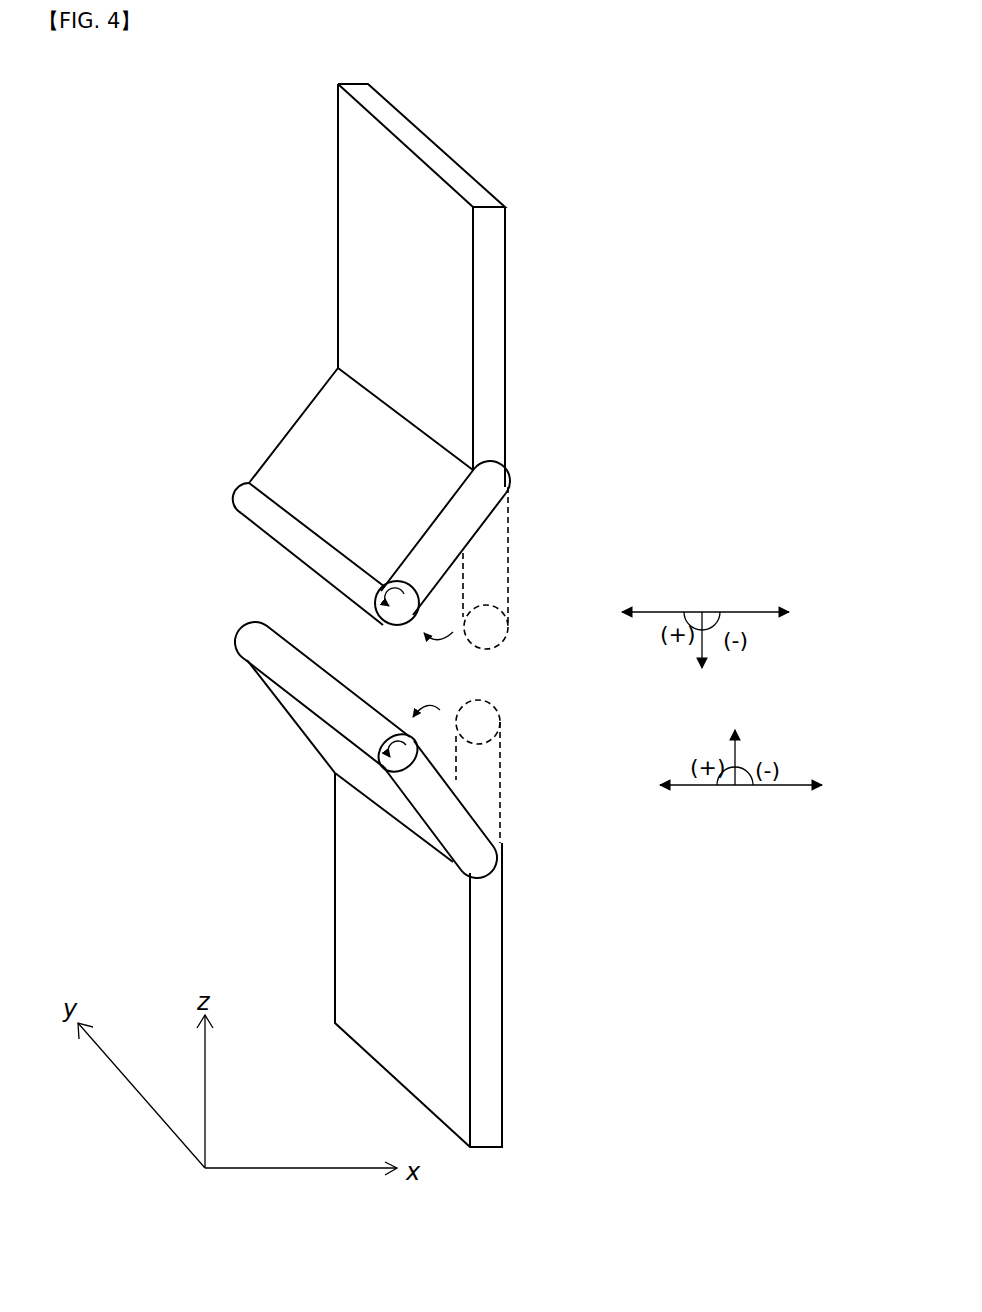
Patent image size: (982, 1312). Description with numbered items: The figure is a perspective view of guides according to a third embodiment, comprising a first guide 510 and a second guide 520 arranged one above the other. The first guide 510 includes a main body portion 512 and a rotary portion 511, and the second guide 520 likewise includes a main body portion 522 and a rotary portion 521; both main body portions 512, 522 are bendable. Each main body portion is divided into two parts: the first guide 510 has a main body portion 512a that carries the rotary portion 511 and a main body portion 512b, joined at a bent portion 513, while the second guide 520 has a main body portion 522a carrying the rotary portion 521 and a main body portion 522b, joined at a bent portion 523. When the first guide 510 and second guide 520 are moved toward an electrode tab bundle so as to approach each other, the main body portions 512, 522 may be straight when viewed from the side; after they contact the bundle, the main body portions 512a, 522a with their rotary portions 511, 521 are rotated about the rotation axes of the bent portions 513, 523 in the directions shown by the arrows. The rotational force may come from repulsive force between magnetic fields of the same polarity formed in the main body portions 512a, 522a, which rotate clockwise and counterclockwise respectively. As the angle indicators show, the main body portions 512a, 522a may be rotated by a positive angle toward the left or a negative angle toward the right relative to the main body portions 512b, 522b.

The first guide 510 is at (408, 354).
The rotary portion 511 is at (245, 507).
The main body portion 512 is at (299, 285).
The main body portion 512a is at (315, 430).
The main body portion 512b is at (358, 281).
The bent portion 513 is at (492, 485).
The second guide 520 is at (393, 859).
The rotary portion 521 is at (262, 650).
The main body portion 522 is at (291, 903).
The main body portion 522a is at (345, 763).
The main body portion 522b is at (347, 853).
The bent portion 523 is at (483, 853).